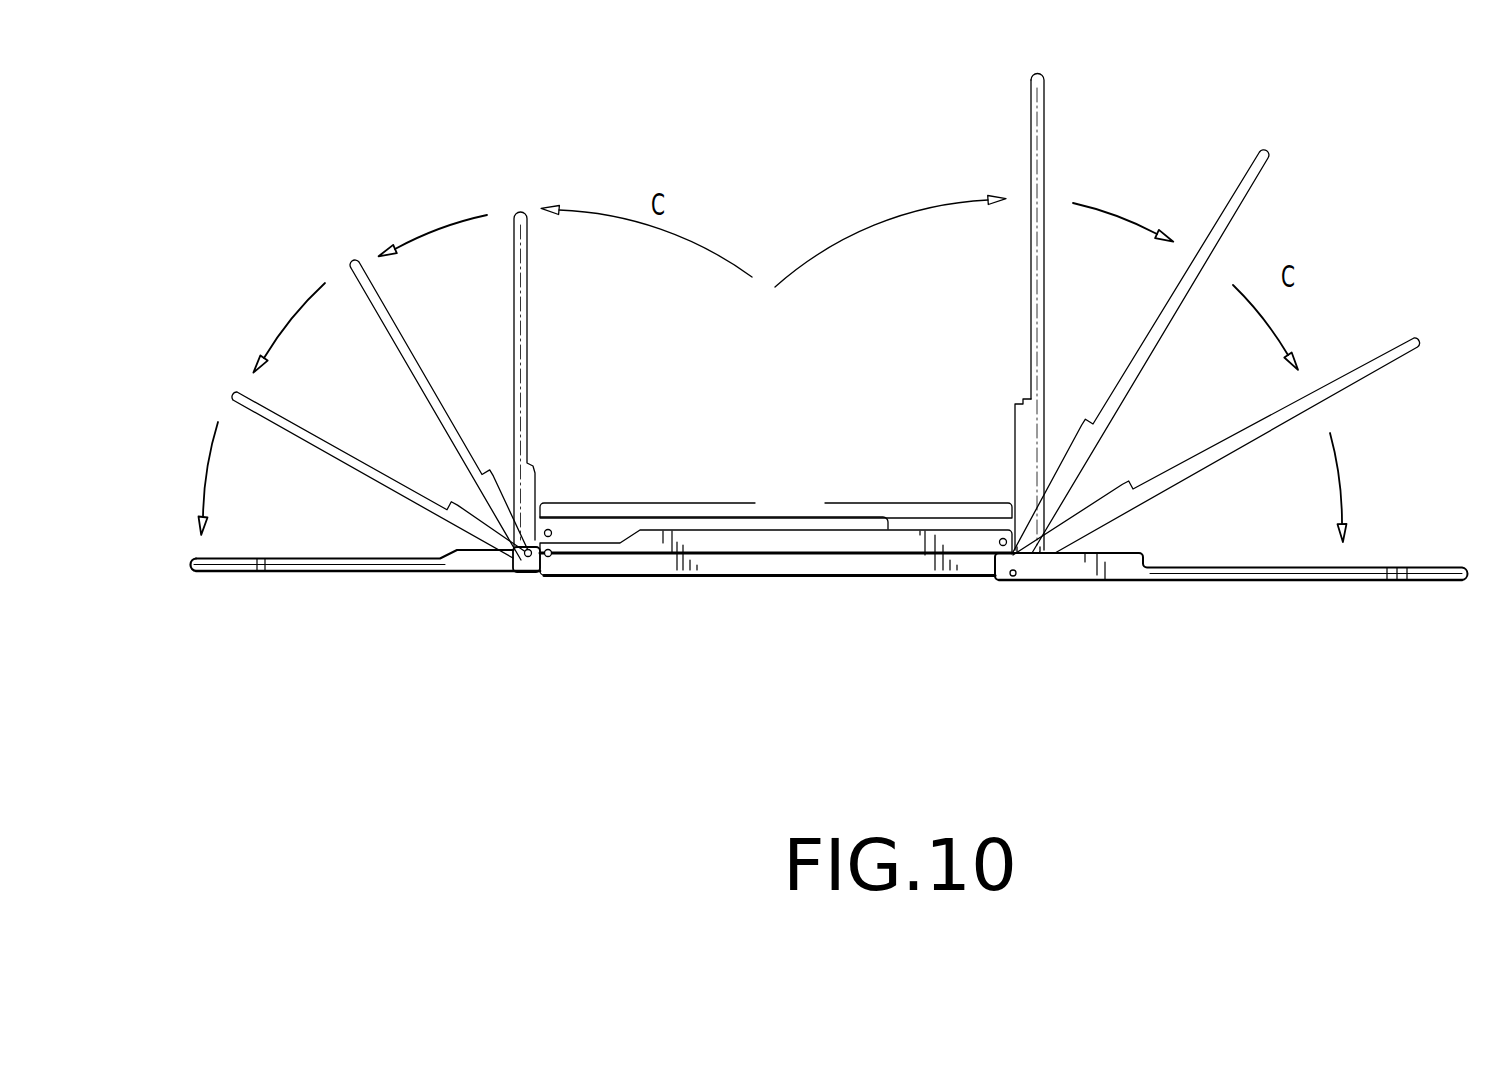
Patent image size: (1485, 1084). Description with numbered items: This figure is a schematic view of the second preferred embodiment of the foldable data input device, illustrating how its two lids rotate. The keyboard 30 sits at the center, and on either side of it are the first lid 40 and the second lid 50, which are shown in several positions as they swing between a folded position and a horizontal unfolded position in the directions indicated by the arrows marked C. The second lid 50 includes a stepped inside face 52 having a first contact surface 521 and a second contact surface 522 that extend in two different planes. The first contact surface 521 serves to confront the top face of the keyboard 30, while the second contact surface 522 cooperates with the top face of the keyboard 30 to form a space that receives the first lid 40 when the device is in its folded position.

The keyboard 30 is at (725, 563).
The first lid 40 is at (407, 565).
The second lid 50 is at (1205, 581).
The stepped inside face 52 is at (1032, 143).
The first contact surface 521 is at (1017, 457).
The second contact surface 522 is at (1030, 352).